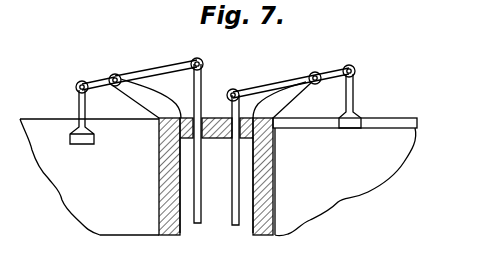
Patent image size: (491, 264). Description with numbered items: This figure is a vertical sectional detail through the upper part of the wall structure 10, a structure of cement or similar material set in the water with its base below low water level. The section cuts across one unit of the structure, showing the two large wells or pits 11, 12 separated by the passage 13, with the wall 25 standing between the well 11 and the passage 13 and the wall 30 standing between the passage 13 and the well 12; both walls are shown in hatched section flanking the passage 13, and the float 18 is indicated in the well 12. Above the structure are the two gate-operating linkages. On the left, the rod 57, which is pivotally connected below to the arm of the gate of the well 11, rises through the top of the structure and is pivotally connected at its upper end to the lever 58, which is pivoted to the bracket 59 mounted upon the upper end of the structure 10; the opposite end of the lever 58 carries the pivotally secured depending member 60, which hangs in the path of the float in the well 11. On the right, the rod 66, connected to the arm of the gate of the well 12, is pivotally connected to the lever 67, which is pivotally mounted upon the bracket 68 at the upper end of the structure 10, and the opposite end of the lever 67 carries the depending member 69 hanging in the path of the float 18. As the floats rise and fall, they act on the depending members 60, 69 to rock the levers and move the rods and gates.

The wall structure 10 is at (398, 116).
The well or pit 11 is at (100, 214).
The well or pit 12 is at (418, 123).
The passage 13 is at (216, 234).
The float 18 is at (362, 180).
The wall 25 is at (170, 228).
The wall 30 is at (265, 188).
The rod 57 is at (201, 208).
The lever 58 is at (153, 68).
The bracket 59 is at (150, 99).
The depending member 60 is at (79, 148).
The rod 66 is at (232, 158).
The lever 67 is at (261, 84).
The bracket 68 is at (296, 90).
The depending member 69 is at (355, 96).